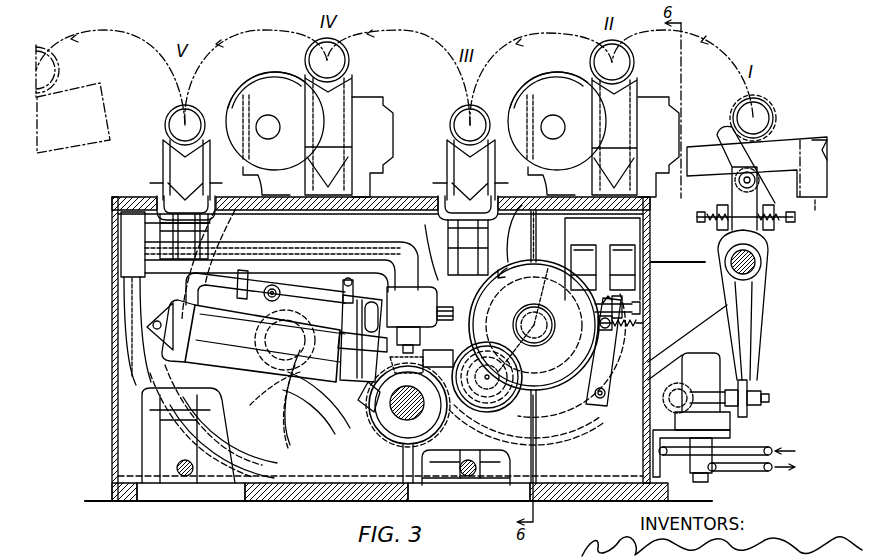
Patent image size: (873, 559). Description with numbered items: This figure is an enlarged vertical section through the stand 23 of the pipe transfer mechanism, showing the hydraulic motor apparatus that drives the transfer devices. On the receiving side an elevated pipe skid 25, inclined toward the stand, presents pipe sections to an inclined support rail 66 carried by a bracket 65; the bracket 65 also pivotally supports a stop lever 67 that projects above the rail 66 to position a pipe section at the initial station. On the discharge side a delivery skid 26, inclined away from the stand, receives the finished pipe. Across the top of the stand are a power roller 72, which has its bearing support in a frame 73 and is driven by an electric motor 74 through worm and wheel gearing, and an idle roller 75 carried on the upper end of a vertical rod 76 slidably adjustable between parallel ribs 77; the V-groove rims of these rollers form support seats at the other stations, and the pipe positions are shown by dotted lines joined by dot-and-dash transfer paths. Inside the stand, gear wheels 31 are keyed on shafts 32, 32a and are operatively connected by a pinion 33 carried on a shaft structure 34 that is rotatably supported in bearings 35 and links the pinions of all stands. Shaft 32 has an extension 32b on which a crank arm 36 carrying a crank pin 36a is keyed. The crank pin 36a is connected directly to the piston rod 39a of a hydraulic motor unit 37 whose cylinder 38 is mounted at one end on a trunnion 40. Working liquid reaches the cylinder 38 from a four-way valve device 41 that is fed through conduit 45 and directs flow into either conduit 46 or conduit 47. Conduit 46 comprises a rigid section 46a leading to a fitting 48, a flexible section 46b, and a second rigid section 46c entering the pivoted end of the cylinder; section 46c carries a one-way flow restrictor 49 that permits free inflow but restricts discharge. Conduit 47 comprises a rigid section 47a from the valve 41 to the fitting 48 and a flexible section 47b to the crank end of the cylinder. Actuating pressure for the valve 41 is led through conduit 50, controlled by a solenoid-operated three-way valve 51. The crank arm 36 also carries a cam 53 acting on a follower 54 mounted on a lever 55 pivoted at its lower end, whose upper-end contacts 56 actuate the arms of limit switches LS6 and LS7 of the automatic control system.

The stand 23 is at (106, 198).
The pipe skid 25 is at (821, 212).
The delivery skid 26 is at (77, 86).
The gear wheel 31 is at (298, 501).
The shaft 32 is at (545, 296).
The shaft 32a is at (275, 388).
The shaft extension 32b is at (571, 355).
The pinion 33 is at (370, 490).
The shaft structure 34 is at (405, 420).
The bearing 35 is at (364, 414).
The crank arm 36 is at (537, 392).
The crank pin 36a is at (495, 395).
The hydraulic motor unit 37 is at (244, 364).
The cylinder 38 is at (222, 350).
The piston rod 39a is at (424, 353).
The trunnion 40 is at (153, 325).
The four-way valve device 41 is at (437, 298).
The conduit 45 is at (361, 338).
The conduit 46 is at (340, 246).
The rigid conduit section 46a is at (267, 253).
The flexible conduit section 46b is at (268, 505).
The rigid conduit section 46c is at (222, 353).
The conduit 47 is at (356, 262).
The rigid conduit section 47a is at (305, 258).
The flexible conduit section 47b is at (290, 515).
The fitting 48 is at (125, 232).
The one-way flow restrictor 49 is at (212, 287).
The conduit 50 is at (343, 283).
The three-way valve 51 is at (708, 465).
The cam 53 is at (511, 278).
The follower 54 is at (644, 324).
The lever 55 is at (590, 372).
The contact 56 is at (556, 310).
The bracket 65 is at (708, 312).
The support rail 66 is at (793, 140).
The stop lever 67 is at (722, 128).
The power roller 72 is at (345, 88).
The frame 73 is at (370, 112).
The electric motor 74 is at (258, 92).
The idle roller 75 is at (172, 157).
The vertical rod 76 is at (185, 225).
The rib 77 is at (165, 445).
The limit switch LS6 is at (630, 262).
The limit switch LS7 is at (570, 258).